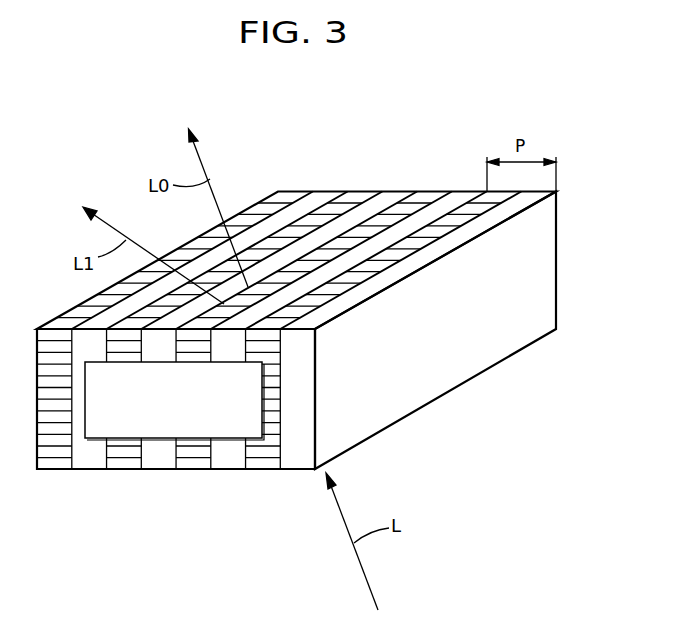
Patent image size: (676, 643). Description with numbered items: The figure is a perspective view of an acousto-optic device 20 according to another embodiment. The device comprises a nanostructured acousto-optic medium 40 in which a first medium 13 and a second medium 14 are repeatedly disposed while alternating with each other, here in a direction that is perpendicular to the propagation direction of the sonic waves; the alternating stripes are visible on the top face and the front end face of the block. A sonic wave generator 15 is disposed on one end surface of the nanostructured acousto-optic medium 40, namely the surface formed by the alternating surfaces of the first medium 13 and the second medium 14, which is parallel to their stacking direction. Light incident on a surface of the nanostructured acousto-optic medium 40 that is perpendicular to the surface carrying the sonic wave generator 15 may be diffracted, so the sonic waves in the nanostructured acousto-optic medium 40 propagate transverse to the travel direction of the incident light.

The first medium 13 is at (290, 195).
The second medium 14 is at (328, 193).
The sonic wave generator 15 is at (102, 430).
The acousto-optic device 20 is at (199, 536).
The nanostructured acousto-optic medium 40 is at (434, 168).